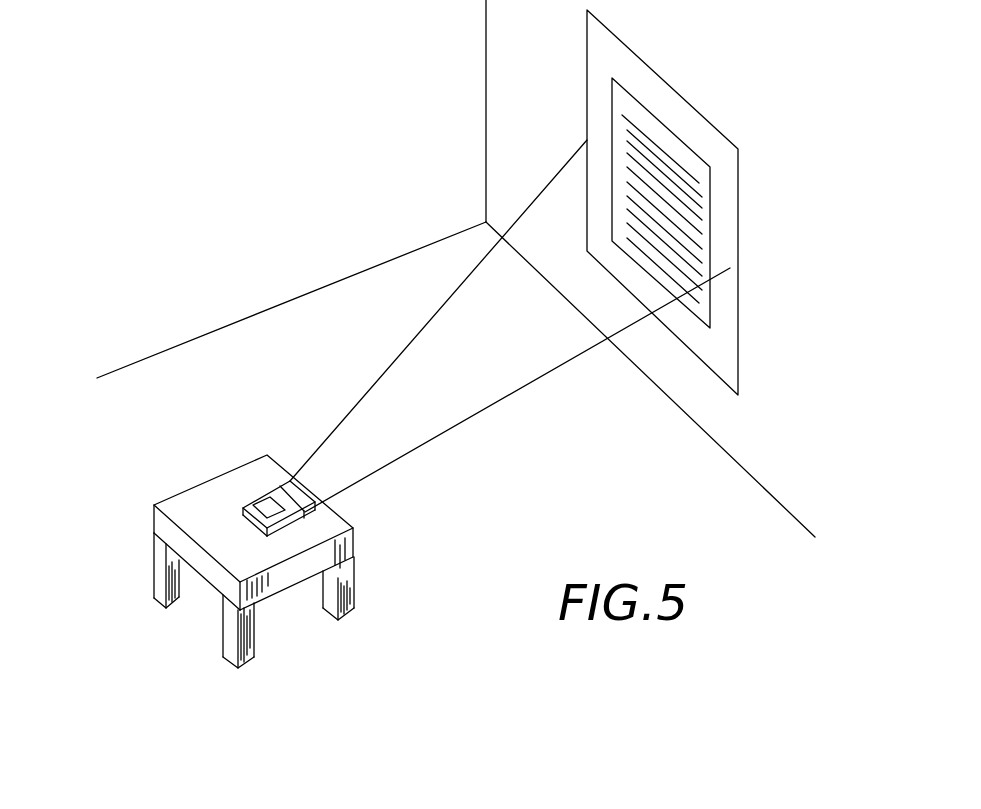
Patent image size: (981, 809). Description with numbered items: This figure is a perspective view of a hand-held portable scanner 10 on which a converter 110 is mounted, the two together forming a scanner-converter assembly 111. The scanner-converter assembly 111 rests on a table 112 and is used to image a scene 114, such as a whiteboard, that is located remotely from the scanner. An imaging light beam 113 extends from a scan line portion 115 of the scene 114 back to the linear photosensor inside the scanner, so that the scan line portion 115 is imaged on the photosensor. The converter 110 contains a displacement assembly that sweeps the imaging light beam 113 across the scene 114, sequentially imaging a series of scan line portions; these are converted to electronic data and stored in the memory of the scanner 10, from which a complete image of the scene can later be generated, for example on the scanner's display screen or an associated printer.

The portable scanner 10 is at (233, 461).
The converter 110 is at (282, 482).
The scanner-converter assembly 111 is at (240, 450).
The table 112 is at (178, 493).
The imaging light beam 113 is at (417, 338).
The scene 114 is at (637, 130).
The scan line portion 115 is at (713, 257).